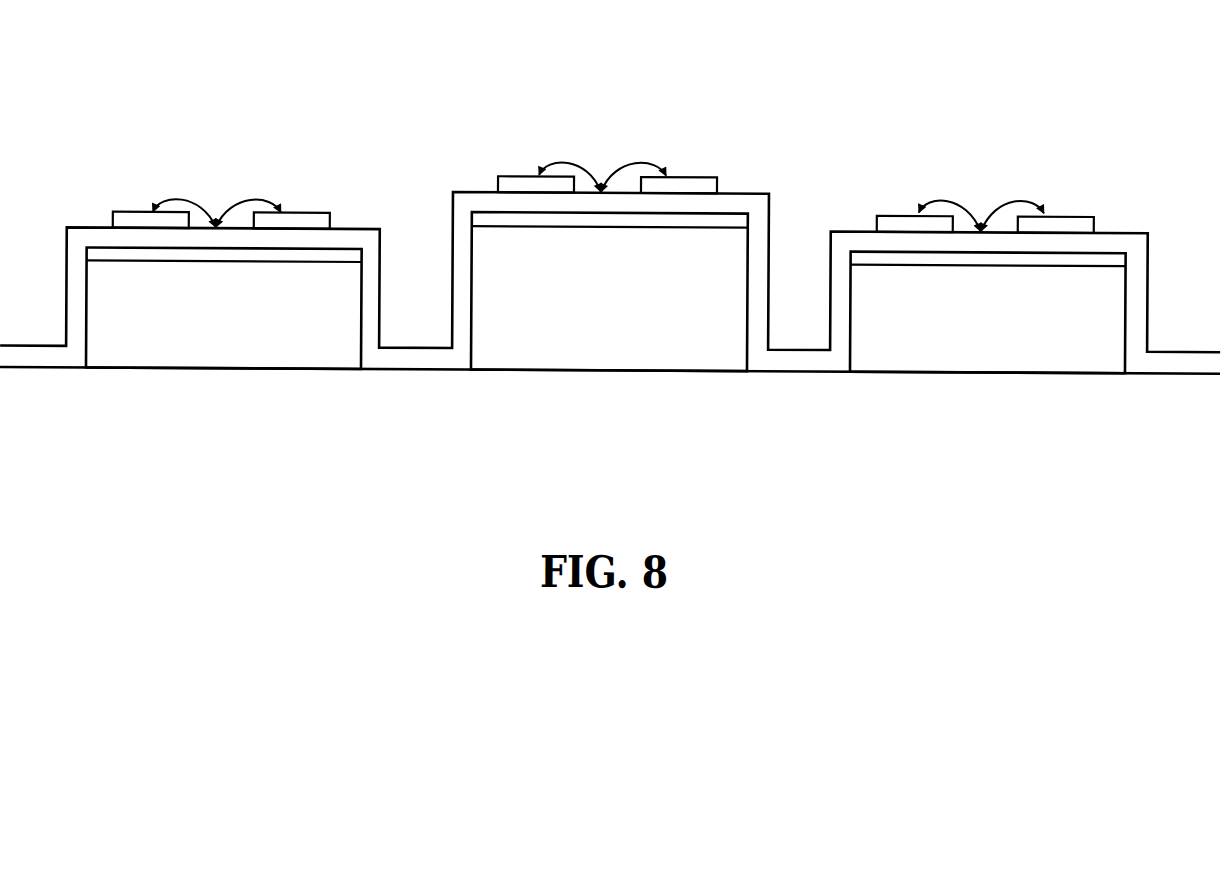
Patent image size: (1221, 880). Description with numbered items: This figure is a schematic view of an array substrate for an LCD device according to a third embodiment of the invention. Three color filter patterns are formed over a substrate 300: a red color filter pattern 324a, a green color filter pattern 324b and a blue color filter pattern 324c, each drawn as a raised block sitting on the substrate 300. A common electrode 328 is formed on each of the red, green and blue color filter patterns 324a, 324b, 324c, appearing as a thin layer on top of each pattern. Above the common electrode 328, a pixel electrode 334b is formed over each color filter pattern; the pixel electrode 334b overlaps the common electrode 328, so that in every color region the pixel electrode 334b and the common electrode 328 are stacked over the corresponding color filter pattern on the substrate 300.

The substrate 300 is at (1214, 477).
The red color filter pattern 324a is at (307, 325).
The green color filter pattern 324b is at (703, 323).
The blue color filter pattern 324c is at (1075, 326).
The common electrode 328 is at (352, 250).
The pixel electrode 334b is at (121, 209).